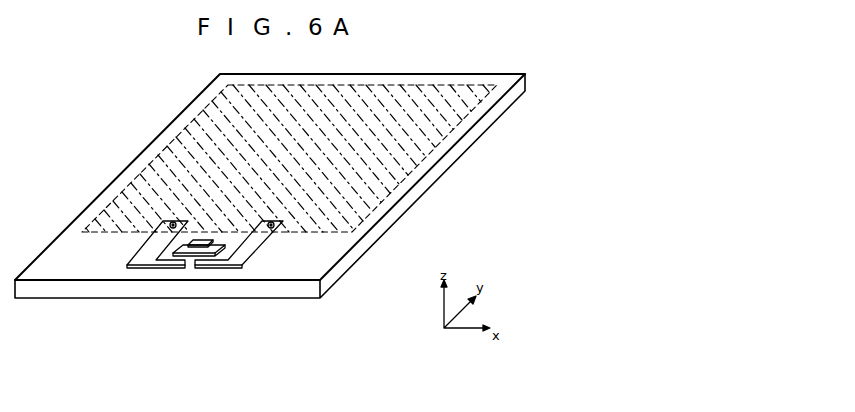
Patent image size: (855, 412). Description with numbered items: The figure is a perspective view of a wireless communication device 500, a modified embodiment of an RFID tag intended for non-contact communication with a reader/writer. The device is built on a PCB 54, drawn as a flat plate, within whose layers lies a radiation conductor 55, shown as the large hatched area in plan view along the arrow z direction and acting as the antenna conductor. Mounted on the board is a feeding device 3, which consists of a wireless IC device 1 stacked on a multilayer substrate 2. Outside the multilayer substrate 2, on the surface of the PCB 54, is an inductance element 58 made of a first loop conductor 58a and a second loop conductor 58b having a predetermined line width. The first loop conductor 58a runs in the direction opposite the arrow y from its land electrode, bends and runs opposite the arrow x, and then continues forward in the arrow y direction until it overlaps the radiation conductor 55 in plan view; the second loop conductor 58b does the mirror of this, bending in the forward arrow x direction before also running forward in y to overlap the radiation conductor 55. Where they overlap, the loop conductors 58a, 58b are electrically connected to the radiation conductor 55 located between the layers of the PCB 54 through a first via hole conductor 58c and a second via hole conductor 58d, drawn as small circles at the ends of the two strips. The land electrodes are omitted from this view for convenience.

The wireless communication device 500 is at (68, 95).
The feeding device 3 is at (118, 58).
The wireless IC device 1 is at (200, 239).
The multilayer substrate 2 is at (190, 247).
The PCB 54 is at (343, 265).
The radiation conductor 55 is at (409, 158).
The inductance element 58 is at (281, 343).
The first loop conductor 58a is at (165, 270).
The second loop conductor 58b is at (200, 270).
The first via hole conductor 58c is at (168, 232).
The second via hole conductor 58d is at (268, 233).